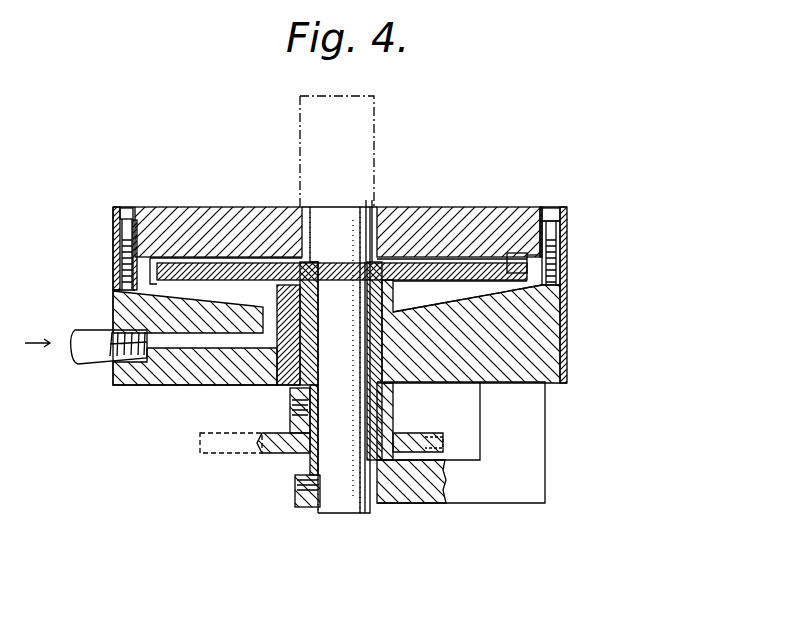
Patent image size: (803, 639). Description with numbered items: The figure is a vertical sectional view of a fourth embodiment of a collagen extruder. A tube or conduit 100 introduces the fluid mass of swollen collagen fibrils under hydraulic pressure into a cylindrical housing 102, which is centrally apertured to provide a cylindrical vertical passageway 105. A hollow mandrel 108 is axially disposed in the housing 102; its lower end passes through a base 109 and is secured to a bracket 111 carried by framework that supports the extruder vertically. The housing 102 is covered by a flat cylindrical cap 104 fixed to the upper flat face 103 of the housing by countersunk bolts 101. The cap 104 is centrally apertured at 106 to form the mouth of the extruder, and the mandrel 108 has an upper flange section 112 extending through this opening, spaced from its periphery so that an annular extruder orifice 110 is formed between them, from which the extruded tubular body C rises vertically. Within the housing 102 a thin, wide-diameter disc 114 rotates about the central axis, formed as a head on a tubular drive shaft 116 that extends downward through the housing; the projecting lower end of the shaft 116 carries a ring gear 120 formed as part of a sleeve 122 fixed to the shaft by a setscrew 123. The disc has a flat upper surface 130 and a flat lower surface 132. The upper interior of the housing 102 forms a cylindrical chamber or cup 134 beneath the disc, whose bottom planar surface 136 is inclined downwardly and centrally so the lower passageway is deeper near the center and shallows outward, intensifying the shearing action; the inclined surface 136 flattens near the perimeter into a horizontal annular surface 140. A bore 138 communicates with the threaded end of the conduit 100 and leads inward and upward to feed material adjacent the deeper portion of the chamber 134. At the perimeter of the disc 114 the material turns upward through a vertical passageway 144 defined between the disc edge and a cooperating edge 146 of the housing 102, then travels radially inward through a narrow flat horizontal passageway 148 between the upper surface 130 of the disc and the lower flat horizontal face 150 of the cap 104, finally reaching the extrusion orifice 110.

The extruded tubular body C is at (378, 110).
The tube or conduit 100 is at (100, 350).
The countersunk bolts 101 is at (572, 208).
The cylindrical housing 102 is at (140, 378).
The upper flat face 103 is at (563, 244).
The flat cylindrical cap 104 is at (525, 207).
The cylindrical vertical passageway 105 is at (380, 358).
The central aperture 106 is at (377, 217).
The hollow mandrel 108 is at (323, 510).
The base 109 is at (432, 498).
The annular extruder orifice 110 is at (302, 230).
The bracket 111 is at (537, 435).
The upper flange section 112 is at (372, 207).
The disc 114 is at (190, 272).
The tubular drive shaft 116 is at (312, 458).
The ring gear 120 is at (262, 453).
The sleeve 122 is at (388, 415).
The setscrew 123 is at (293, 410).
The upper surface 130 is at (215, 278).
The lower surface 132 is at (203, 291).
The cylindrical chamber or cup 134 is at (548, 306).
The bottom planar surface 136 is at (447, 296).
The bore 138 is at (217, 343).
The horizontal annular surface 140 is at (562, 286).
The vertical passageway 144 is at (160, 274).
The cooperating edge 146 is at (563, 258).
The flat horizontal passageway 148 is at (565, 226).
The lower flat horizontal face 150 is at (468, 250).